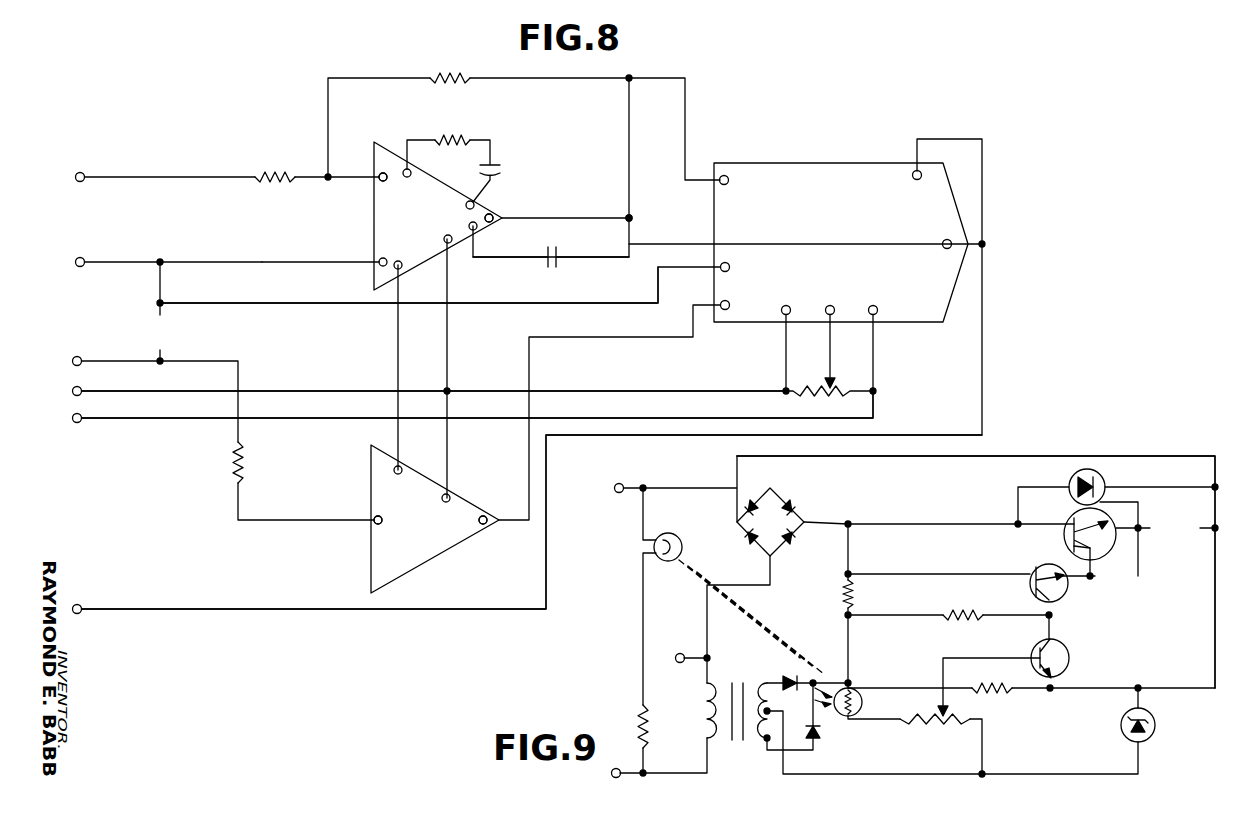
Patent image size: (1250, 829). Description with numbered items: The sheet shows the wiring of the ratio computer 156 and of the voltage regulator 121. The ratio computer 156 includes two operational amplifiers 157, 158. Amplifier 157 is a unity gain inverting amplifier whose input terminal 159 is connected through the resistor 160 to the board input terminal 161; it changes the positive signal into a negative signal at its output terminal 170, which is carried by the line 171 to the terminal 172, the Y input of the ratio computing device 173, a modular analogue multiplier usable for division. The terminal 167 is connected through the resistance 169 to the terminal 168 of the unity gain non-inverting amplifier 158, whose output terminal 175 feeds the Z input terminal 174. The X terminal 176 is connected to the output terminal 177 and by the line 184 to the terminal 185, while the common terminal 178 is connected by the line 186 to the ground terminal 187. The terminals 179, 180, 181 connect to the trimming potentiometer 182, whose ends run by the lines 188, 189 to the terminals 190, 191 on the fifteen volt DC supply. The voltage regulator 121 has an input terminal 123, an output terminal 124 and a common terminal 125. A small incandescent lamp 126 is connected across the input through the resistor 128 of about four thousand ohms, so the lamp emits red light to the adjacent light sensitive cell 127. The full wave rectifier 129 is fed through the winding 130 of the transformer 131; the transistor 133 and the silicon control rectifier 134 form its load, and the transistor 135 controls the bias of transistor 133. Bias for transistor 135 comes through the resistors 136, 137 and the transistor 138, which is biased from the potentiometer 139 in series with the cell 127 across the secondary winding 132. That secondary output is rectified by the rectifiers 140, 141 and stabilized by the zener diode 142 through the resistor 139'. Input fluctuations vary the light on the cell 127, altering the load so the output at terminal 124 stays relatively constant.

In FIG. 8, the ratio computer 156 is at (588, 186).
In FIG. 8, the operational amplifier 157 is at (378, 233).
In FIG. 8, the operational amplifier 158 is at (372, 491).
In FIG. 8, the input terminal 159 is at (375, 186).
In FIG. 8, the resistor 160 is at (273, 174).
In FIG. 8, the board input terminal 161 is at (84, 174).
In FIG. 8, the terminal 167 is at (71, 359).
In FIG. 8, the terminal 168 is at (374, 523).
In FIG. 8, the resistance 169 is at (242, 468).
In FIG. 8, the output terminal 170 is at (492, 216).
In FIG. 8, the line 171 is at (631, 213).
In FIG. 8, the terminal 172 is at (729, 184).
In FIG. 8, the ratio computing device 173 is at (840, 176).
In FIG. 8, the terminal 174 is at (730, 301).
In FIG. 8, the output terminal 175 is at (485, 513).
In FIG. 8, the X terminal 176 is at (913, 177).
In FIG. 8, the output terminal 177 is at (942, 247).
In FIG. 8, the common terminal 178 is at (729, 264).
In FIG. 8, the terminal 179 is at (796, 298).
In FIG. 8, the terminal 180 is at (840, 298).
In FIG. 8, the terminal 181 is at (877, 306).
In FIG. 8, the trimming potentiometer 182 is at (796, 397).
In FIG. 8, the line 184 is at (421, 612).
In FIG. 8, the terminal 185 is at (84, 606).
In FIG. 8, the line 186 is at (558, 303).
In FIG. 8, the ground terminal 187 is at (84, 259).
In FIG. 8, the line 188 is at (557, 391).
In FIG. 8, the line 189 is at (477, 405).
In FIG. 8, the terminal 190 is at (71, 389).
In FIG. 8, the terminal 191 is at (71, 416).
In FIG. 9, the voltage regulator 121 is at (936, 503).
In FIG. 9, the input terminal 123 is at (622, 484).
In FIG. 9, the output terminal 124 is at (683, 653).
In FIG. 9, the terminal 125 is at (621, 778).
In FIG. 9, the lamp 126 is at (684, 553).
In FIG. 9, the light sensitive cell 127 is at (863, 702).
In FIG. 9, the resistor 128 is at (648, 728).
In FIG. 9, the full wave rectifier 129 is at (773, 512).
In FIG. 9, the winding 130 is at (712, 686).
In FIG. 9, the transformer 131 is at (736, 740).
In FIG. 9, the secondary winding 132 is at (767, 752).
In FIG. 9, the transistor 133 is at (1066, 518).
In FIG. 9, the silicon control rectifier 134 is at (1099, 470).
In FIG. 9, the transistor 135 is at (1033, 571).
In FIG. 9, the resistor 136 is at (854, 600).
In FIG. 9, the resistor 137 is at (950, 618).
In FIG. 9, the transistor 138 is at (1070, 667).
In FIG. 9, the potentiometer 139 is at (931, 735).
In FIG. 9, the resistor 139' is at (1013, 701).
In FIG. 9, the rectifier 140 is at (792, 676).
In FIG. 9, the rectifier 141 is at (821, 737).
In FIG. 9, the zener diode 142 is at (1121, 731).